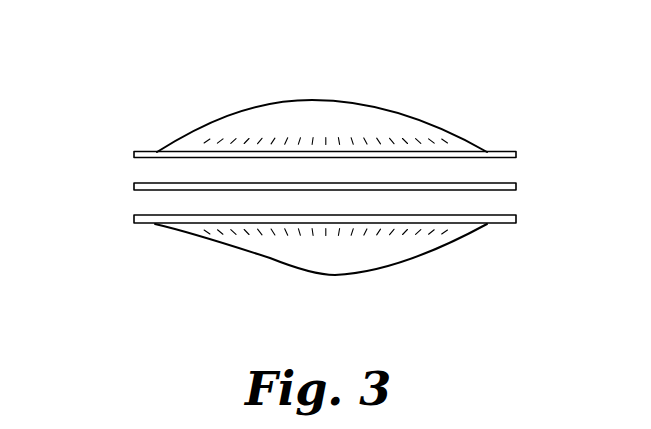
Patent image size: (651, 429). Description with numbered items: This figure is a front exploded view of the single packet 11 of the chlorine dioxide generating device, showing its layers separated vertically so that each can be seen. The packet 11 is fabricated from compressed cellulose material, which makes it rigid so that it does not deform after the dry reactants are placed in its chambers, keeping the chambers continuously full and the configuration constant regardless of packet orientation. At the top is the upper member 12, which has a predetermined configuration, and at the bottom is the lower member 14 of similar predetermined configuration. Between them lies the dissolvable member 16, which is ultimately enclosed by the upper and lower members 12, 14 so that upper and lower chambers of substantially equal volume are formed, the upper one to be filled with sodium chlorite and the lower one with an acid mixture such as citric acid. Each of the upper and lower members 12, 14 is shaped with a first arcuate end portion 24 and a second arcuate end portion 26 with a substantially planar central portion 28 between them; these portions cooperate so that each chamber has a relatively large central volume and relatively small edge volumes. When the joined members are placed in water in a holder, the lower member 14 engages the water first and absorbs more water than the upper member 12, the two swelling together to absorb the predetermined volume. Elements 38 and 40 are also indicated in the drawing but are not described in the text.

The single packet 11 is at (499, 104).
The upper member 12 is at (396, 110).
The lower member 14 is at (388, 264).
The dissolvable member 16 is at (517, 186).
The first arcuate end portion 24 is at (188, 147).
The second arcuate end portion 26 is at (475, 146).
The planar central portion 28 is at (325, 108).
The upper gap 38 is at (156, 186).
The lower gap 40 is at (156, 186).